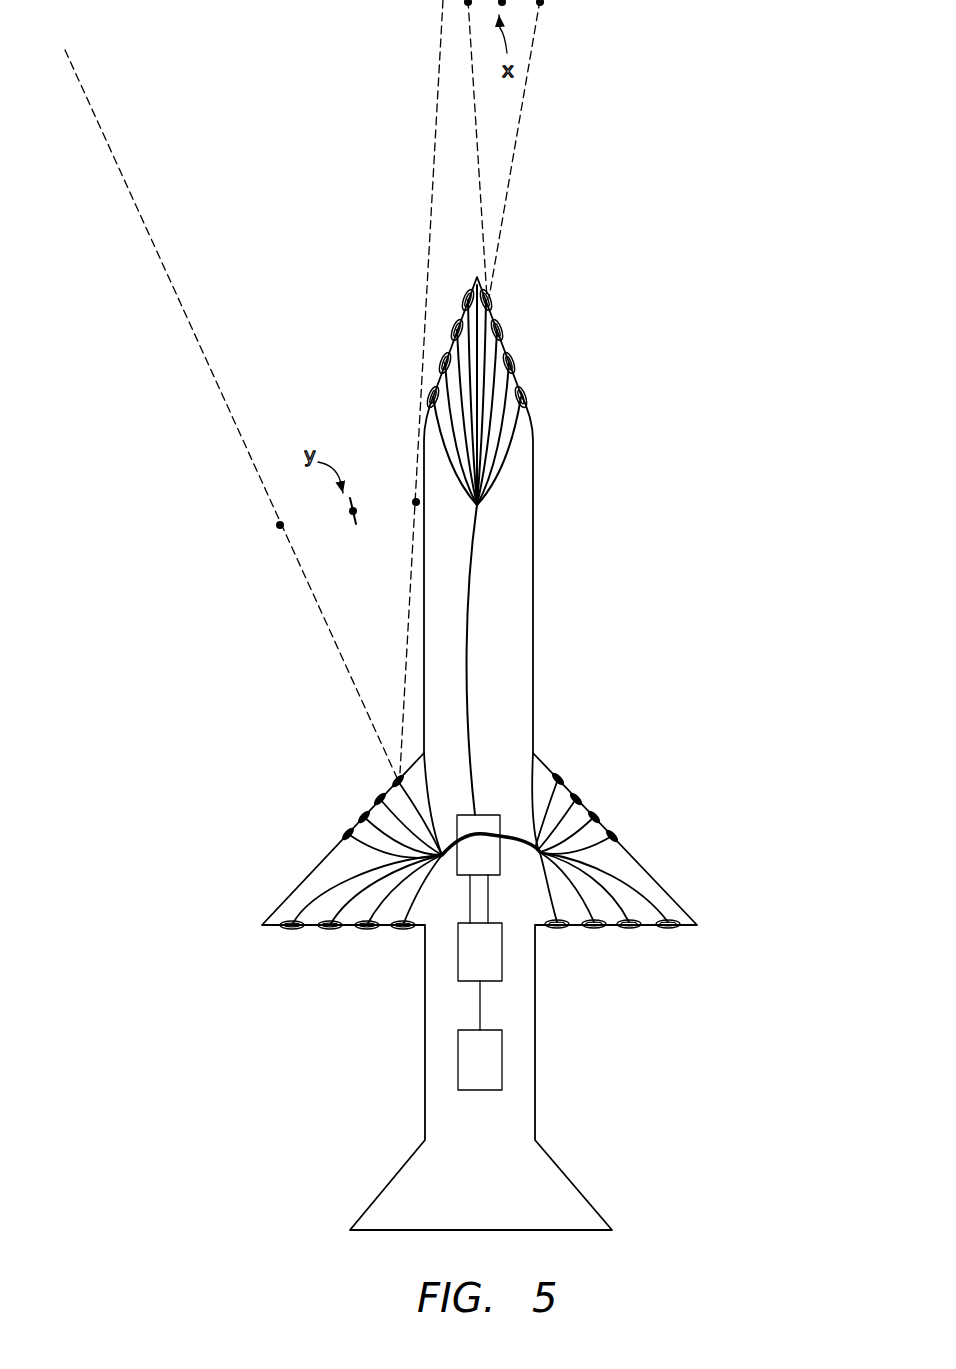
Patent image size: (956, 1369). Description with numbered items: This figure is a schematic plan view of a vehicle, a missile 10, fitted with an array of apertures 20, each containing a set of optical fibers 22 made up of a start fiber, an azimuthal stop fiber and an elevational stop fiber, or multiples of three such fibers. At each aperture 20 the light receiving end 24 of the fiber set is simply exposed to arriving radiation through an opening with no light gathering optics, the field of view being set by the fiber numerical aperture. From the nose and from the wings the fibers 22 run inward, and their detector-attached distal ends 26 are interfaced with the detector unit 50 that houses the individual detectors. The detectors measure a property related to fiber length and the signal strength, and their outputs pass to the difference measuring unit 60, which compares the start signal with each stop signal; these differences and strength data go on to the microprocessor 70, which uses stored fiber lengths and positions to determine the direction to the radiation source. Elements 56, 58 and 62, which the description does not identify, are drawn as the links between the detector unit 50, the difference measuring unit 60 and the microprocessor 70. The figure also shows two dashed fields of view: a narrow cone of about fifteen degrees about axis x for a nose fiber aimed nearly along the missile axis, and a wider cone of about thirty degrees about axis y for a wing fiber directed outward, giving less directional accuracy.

The missile 10 is at (593, 587).
The aperture 20 is at (567, 776).
The set of optical fibers 22 is at (513, 470).
The light receiving end 24 is at (597, 856).
The distal end 26 is at (495, 812).
The detector unit 50 is at (491, 845).
The optical fiber lead 56 is at (470, 910).
The optical fiber lead 58 is at (490, 910).
The difference measuring unit 60 is at (480, 952).
The connection line 62 is at (480, 1017).
The microprocessor 70 is at (480, 1060).